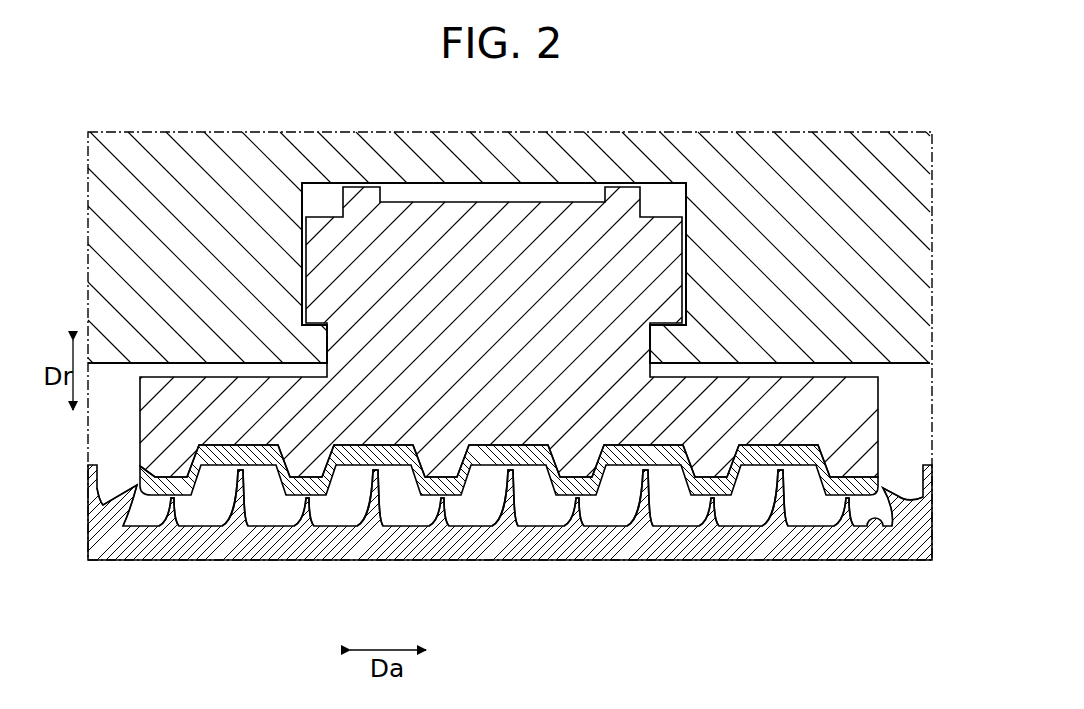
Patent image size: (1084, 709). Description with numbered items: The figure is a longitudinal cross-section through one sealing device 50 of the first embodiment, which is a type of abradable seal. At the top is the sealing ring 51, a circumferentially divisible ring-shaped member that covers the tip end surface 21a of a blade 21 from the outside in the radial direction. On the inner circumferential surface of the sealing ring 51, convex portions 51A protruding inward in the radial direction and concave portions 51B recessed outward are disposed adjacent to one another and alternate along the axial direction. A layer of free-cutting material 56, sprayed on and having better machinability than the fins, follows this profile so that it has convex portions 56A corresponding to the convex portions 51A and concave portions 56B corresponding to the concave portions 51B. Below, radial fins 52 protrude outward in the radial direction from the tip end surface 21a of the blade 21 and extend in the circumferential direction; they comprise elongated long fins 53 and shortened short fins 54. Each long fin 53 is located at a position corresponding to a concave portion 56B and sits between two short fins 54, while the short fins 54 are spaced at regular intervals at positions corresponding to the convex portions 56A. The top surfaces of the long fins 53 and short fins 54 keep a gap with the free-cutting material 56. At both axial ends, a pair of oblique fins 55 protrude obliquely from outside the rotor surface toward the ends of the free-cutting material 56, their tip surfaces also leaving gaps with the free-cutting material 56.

The sealing device 50 is at (814, 121).
The sealing ring 51 is at (857, 400).
The convex portion 51A is at (705, 455).
The concave portion 51B is at (792, 435).
The radial fins 52 is at (143, 602).
The long fins 53 is at (240, 472).
The short fins 54 is at (172, 500).
The oblique fins 55 is at (134, 490).
The free-cutting material 56 is at (867, 478).
The convex portions 56A is at (710, 487).
The concave portions 56B is at (803, 453).
The blades 21 is at (933, 537).
The tip end surface 21a is at (882, 528).